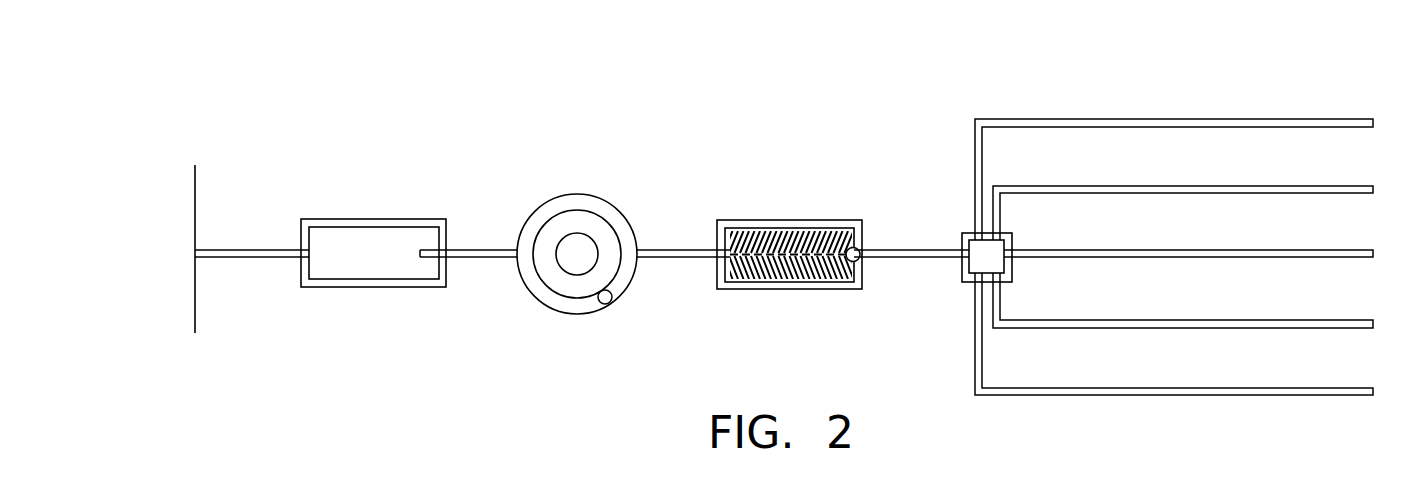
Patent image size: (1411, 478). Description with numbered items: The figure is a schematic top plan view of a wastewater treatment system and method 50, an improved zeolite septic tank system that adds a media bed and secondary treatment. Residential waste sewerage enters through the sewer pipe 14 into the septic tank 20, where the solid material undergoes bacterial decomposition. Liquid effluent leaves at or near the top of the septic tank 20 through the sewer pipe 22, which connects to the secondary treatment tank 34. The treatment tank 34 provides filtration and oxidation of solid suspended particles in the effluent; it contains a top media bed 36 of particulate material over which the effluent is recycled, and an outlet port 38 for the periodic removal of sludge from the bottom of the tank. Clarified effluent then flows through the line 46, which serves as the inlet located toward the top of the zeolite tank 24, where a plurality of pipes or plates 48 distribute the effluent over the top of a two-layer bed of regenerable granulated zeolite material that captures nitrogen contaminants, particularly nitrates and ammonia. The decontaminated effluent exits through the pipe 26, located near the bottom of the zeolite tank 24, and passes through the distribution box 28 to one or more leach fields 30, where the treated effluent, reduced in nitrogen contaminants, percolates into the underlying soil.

The sewer pipe 14 is at (228, 247).
The septic tank 20 is at (348, 218).
The sewer pipe 22 is at (487, 260).
The zeolite tank 24 is at (789, 251).
The pipe 26 is at (897, 248).
The distribution box 28 is at (958, 267).
The leach field 30 is at (1140, 129).
The secondary treatment tank 34 is at (552, 312).
The top media bed 36 is at (585, 225).
The outlet port 38 is at (607, 303).
The line 46 is at (663, 247).
The pipes or plates 48 is at (775, 279).
The system and method 50 is at (420, 108).